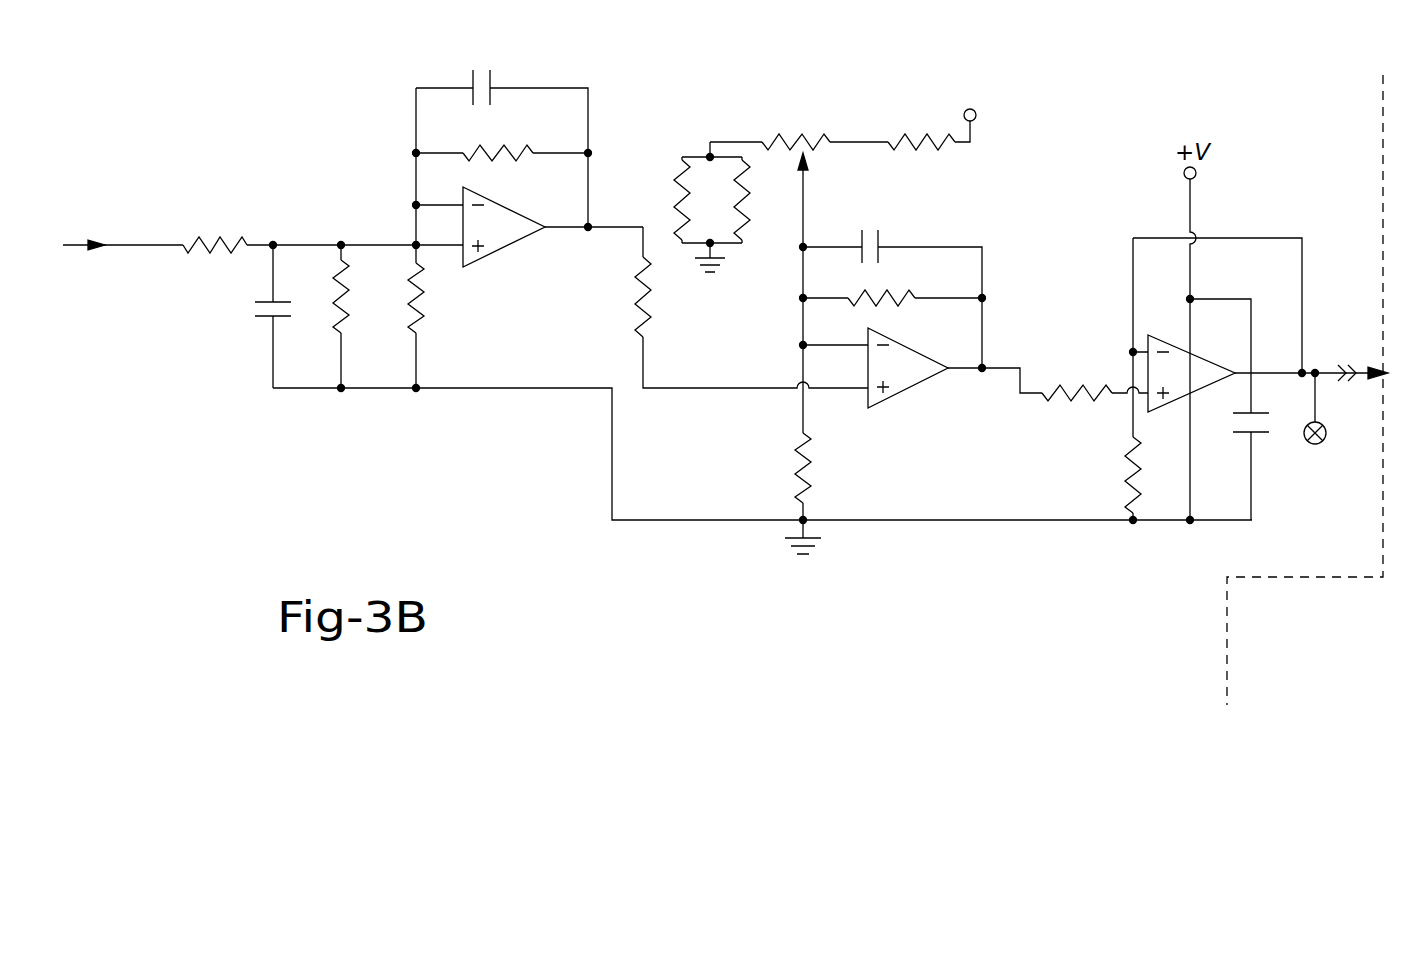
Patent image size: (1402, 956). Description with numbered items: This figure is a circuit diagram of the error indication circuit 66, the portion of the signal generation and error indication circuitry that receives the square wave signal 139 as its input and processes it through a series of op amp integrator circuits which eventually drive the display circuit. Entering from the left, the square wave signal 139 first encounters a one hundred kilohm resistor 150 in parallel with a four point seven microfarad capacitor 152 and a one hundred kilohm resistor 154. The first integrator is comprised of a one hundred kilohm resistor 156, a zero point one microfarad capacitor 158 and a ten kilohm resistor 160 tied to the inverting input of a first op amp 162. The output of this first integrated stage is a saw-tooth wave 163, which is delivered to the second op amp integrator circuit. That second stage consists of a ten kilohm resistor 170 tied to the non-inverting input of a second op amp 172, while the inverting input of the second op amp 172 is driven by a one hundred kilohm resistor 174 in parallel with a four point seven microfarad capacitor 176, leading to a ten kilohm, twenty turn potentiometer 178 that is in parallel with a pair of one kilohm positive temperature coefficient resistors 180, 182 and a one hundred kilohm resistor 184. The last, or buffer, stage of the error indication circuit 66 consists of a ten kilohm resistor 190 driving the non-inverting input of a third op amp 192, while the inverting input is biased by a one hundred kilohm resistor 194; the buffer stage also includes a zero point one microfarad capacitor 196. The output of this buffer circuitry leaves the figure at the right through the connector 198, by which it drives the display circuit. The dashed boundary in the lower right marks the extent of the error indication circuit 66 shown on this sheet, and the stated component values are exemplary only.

The square wave signal 139 is at (123, 228).
The resistor 150 is at (195, 262).
The capacitor 152 is at (263, 318).
The resistor 154 is at (339, 298).
The resistor 156 is at (448, 293).
The capacitor 158 is at (496, 84).
The resistor 160 is at (493, 157).
The first op amp 162 is at (503, 226).
The saw-tooth wave 163 is at (617, 230).
The resistor 170 is at (648, 290).
The second op amp 172 is at (922, 367).
The resistor 174 is at (862, 292).
The capacitor 176 is at (896, 240).
The potentiometer 178 is at (824, 132).
The positive temperature coefficient resistor 180 is at (672, 201).
The positive temperature coefficient resistor 182 is at (748, 182).
The resistor 184 is at (889, 137).
The resistor 190 is at (1103, 383).
The third op amp 192 is at (1187, 369).
The resistor 194 is at (1128, 452).
The capacitor 196 is at (1241, 432).
The connector 198 is at (1346, 389).
The error indication circuit 66 is at (1162, 566).